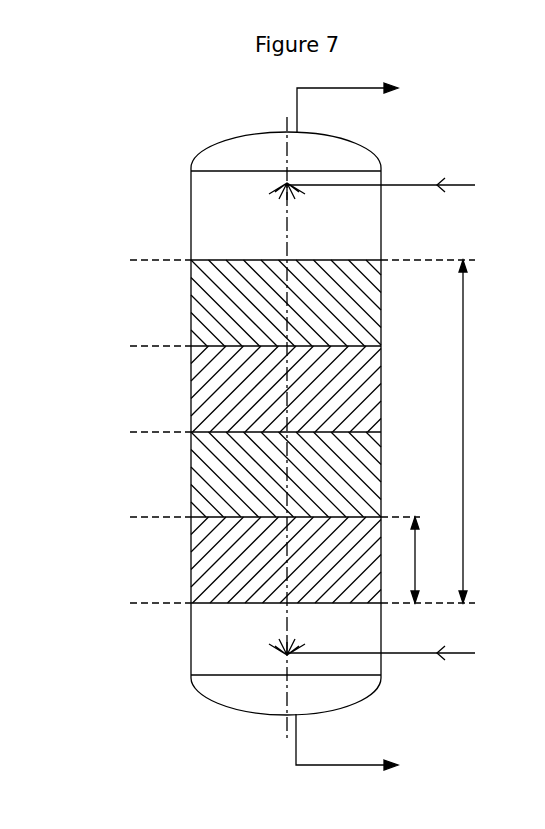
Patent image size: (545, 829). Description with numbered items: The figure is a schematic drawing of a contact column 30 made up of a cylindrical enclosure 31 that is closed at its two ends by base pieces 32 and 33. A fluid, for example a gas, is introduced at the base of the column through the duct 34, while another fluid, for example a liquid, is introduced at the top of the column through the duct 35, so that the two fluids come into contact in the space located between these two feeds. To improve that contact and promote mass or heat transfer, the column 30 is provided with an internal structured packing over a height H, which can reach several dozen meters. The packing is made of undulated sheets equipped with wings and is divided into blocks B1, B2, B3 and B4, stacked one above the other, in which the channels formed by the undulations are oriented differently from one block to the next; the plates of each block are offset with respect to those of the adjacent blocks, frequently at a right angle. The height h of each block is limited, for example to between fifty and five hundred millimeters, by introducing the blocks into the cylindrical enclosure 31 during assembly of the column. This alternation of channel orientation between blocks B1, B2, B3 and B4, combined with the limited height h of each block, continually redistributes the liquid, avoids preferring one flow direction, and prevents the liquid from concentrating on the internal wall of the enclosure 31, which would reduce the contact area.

The contact column 30 is at (129, 642).
The cylindrical enclosure 31 is at (381, 626).
The base piece 32 is at (213, 700).
The base piece 33 is at (215, 146).
The duct 34 is at (462, 656).
The duct 35 is at (465, 188).
The block B1 is at (139, 260).
The block B2 is at (139, 346).
The block B3 is at (139, 432).
The block B4 is at (139, 517).
The height of the internal packing H is at (473, 431).
The height of a block h is at (423, 560).